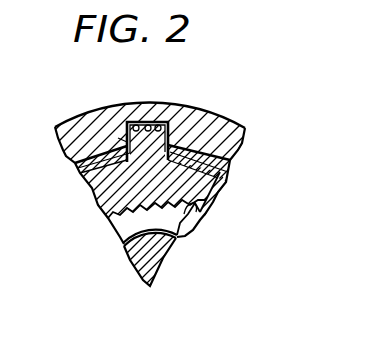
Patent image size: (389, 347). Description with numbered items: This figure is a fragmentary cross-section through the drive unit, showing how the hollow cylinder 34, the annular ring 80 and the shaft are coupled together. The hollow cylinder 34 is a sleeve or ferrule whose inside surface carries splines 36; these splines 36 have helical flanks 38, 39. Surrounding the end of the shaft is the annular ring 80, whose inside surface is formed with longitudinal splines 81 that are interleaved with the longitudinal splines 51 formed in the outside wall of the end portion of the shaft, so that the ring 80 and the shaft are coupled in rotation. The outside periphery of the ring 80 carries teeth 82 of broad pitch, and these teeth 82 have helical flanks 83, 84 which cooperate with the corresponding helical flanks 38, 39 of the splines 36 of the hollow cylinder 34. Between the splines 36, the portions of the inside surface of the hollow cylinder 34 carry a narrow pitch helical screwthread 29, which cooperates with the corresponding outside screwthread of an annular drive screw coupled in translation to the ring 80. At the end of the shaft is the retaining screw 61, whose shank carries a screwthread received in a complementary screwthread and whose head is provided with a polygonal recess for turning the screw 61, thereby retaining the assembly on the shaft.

The hollow cylinder 34 is at (58, 117).
The helical flank 39 is at (179, 110).
The helical flank 84 is at (223, 121).
The narrow pitch helical screwthread 29 is at (83, 167).
The helical flank 38 is at (130, 126).
The helical flank 83 is at (122, 140).
The splines 36 is at (147, 120).
The annular ring 80 is at (82, 195).
The longitudinal splines 81 is at (112, 220).
The teeth 82 is at (212, 187).
The longitudinal splines 51 is at (188, 208).
The retaining screw 61 is at (126, 268).